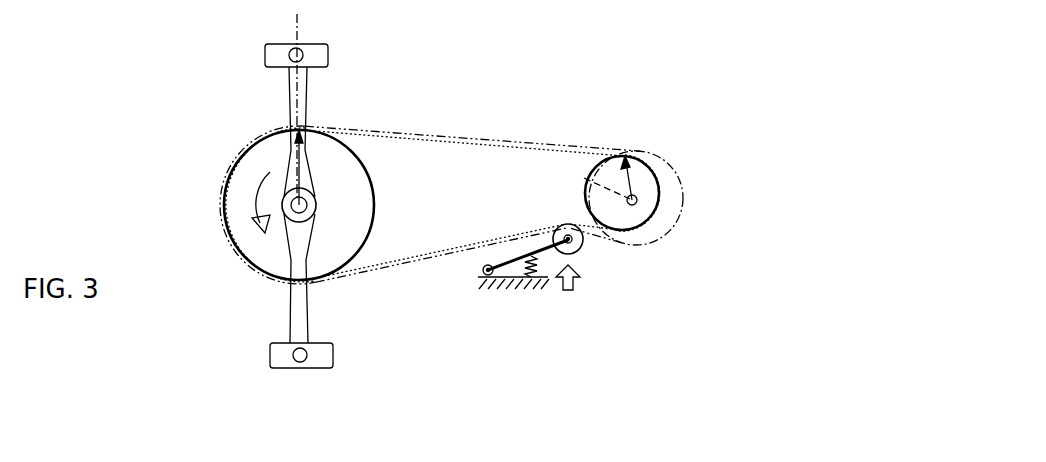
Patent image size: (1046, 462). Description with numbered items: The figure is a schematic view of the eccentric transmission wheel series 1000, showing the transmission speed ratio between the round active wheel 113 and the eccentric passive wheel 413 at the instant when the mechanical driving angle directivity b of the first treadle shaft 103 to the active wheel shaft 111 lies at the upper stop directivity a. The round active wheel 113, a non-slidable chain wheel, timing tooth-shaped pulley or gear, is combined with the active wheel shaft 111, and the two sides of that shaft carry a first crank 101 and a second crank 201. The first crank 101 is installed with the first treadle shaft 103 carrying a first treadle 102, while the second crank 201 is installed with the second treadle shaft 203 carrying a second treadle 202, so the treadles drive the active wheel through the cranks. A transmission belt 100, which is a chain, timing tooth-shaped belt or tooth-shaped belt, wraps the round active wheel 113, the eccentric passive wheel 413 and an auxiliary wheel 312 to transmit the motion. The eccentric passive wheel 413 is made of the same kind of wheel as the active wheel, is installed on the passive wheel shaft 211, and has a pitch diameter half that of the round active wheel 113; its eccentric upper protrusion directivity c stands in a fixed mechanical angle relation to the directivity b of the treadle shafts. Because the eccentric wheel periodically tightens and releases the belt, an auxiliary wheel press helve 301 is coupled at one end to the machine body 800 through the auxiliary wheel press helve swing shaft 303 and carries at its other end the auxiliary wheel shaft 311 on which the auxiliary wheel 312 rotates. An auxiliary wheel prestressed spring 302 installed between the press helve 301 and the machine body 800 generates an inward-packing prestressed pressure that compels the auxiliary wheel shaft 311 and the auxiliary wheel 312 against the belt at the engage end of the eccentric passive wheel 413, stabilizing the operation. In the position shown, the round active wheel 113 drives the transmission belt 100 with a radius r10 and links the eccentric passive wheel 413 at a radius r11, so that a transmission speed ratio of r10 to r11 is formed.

The transmission belt 100 is at (435, 140).
The eccentric transmission wheel series 1000 is at (540, 145).
The first crank 101 is at (289, 118).
The first treadle 102 is at (328, 52).
The first treadle shaft 103 is at (289, 56).
The active wheel shaft 111 is at (310, 220).
The round active wheel 113 is at (226, 181).
The second crank 201 is at (283, 302).
The second treadle 202 is at (285, 368).
The second treadle shaft 203 is at (307, 356).
The passive wheel shaft 211 is at (637, 232).
The eccentric passive wheel 413 is at (660, 212).
The auxiliary wheel press helve 301 is at (497, 264).
The auxiliary wheel prestressed spring 302 is at (528, 268).
The auxiliary wheel press helve swing shaft 303 is at (482, 268).
The auxiliary wheel shaft 311 is at (567, 224).
The auxiliary wheel 312 is at (573, 254).
The machine body 800 is at (479, 283).
The radius of round active wheel r10 is at (310, 168).
The radius of eccentric passive wheel r11 is at (635, 178).
The upper stop directivity a is at (294, 100).
The mechanical driving angle directivity b is at (310, 112).
The eccentric upper protrusion directivity c is at (598, 178).